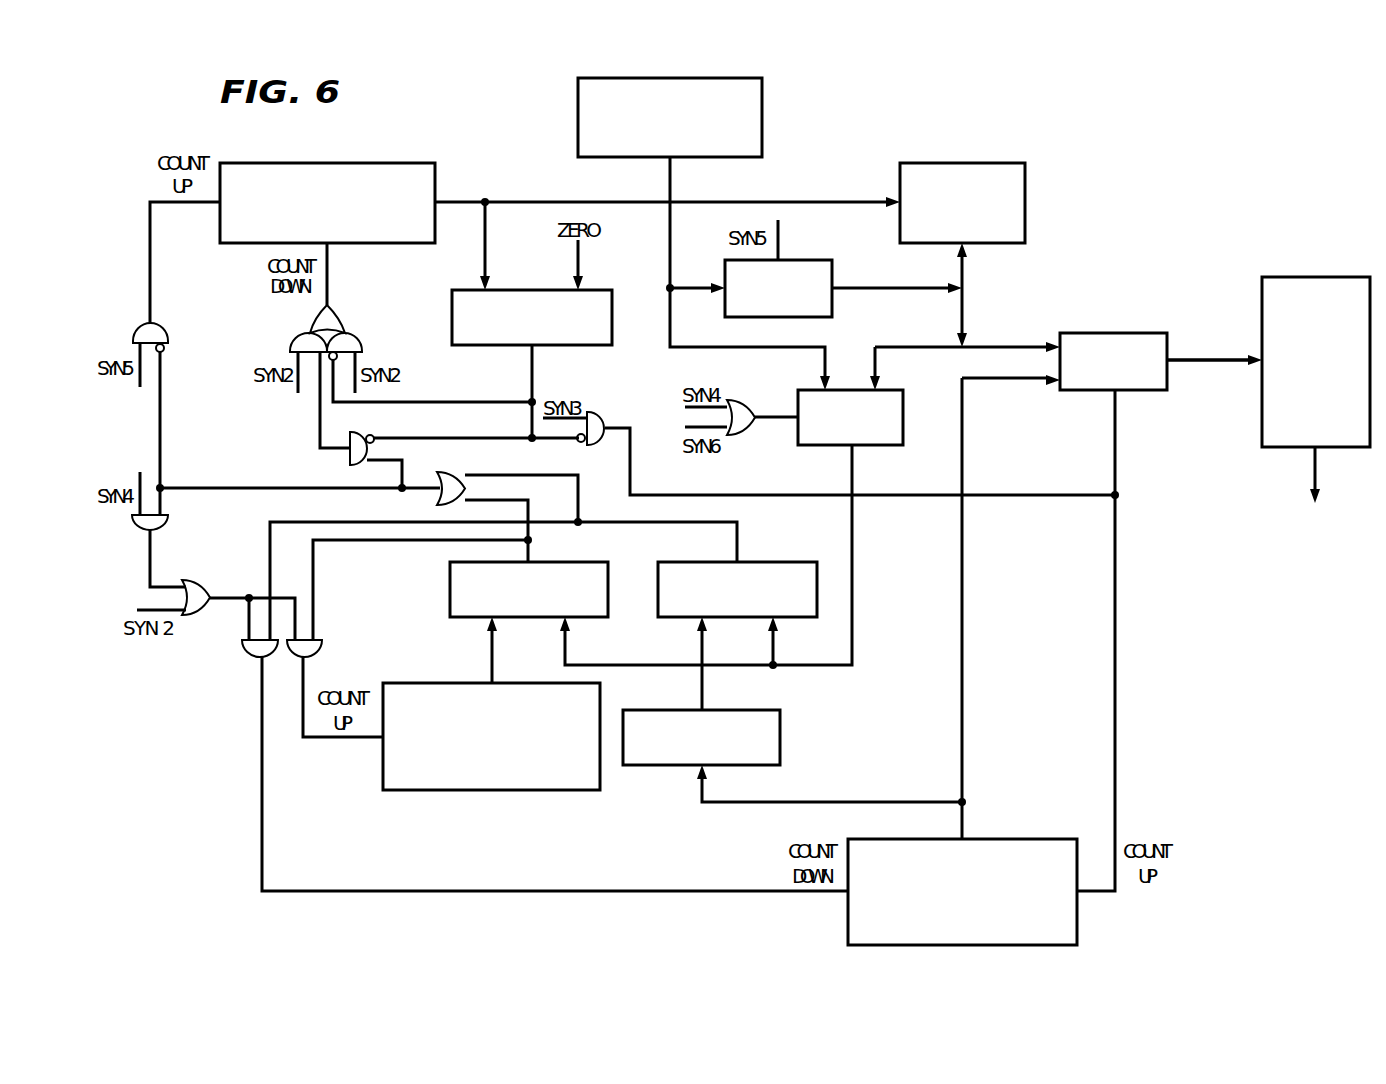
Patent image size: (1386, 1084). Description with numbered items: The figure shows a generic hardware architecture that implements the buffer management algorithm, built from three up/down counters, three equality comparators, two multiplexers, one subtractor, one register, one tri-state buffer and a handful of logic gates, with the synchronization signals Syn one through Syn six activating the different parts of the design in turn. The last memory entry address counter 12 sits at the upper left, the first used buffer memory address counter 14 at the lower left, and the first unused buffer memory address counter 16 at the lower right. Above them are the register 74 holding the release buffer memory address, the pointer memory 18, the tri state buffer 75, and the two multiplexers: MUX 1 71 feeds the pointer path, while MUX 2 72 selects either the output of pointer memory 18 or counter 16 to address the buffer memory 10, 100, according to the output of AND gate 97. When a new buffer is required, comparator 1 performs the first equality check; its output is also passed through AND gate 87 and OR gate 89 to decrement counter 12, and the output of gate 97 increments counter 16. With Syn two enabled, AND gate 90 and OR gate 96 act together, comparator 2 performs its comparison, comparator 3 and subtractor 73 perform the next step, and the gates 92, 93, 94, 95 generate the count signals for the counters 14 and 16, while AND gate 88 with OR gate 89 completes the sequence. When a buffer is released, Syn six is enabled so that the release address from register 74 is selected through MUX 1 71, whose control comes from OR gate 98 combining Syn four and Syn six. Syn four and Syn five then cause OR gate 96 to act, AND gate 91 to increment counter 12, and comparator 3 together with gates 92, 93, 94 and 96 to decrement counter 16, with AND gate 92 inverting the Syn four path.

The up/down counter 12 is at (300, 163).
The register 74 is at (578, 125).
The pointer memory 18 is at (930, 163).
The tri state buffer 75 is at (810, 260).
The multiplexer 72 is at (1111, 333).
The buffer memory 10 is at (1262, 311).
The buffer memory 100 is at (1199, 362).
The comparator 1 is at (531, 290).
The comparator 2 is at (590, 562).
The comparator 3 is at (740, 562).
The subtractor 73 is at (780, 746).
The up/down counter 14 is at (480, 790).
The up/down counter 16 is at (1077, 910).
The multiplexer 71 is at (852, 390).
The AND gate 91 is at (160, 323).
The OR gate 89 is at (338, 312).
The AND gate 88 is at (294, 340).
The AND gate 87 is at (356, 339).
The AND gate 90 is at (350, 460).
The AND gate 97 is at (603, 416).
The OR gate 96 is at (440, 495).
The OR gate 98 is at (749, 401).
The AND gate 92 is at (161, 530).
The OR gate 93 is at (207, 615).
The AND gate 94 is at (248, 659).
The AND gate 95 is at (316, 658).